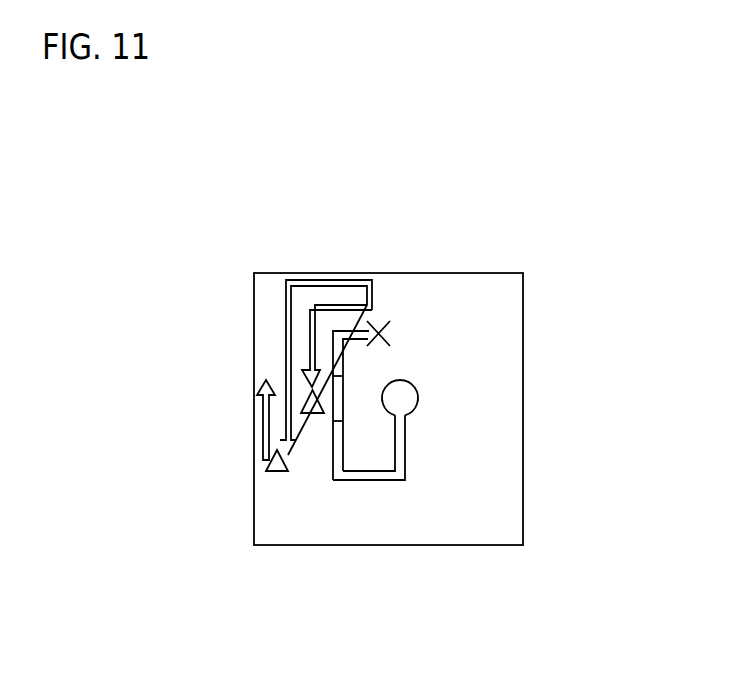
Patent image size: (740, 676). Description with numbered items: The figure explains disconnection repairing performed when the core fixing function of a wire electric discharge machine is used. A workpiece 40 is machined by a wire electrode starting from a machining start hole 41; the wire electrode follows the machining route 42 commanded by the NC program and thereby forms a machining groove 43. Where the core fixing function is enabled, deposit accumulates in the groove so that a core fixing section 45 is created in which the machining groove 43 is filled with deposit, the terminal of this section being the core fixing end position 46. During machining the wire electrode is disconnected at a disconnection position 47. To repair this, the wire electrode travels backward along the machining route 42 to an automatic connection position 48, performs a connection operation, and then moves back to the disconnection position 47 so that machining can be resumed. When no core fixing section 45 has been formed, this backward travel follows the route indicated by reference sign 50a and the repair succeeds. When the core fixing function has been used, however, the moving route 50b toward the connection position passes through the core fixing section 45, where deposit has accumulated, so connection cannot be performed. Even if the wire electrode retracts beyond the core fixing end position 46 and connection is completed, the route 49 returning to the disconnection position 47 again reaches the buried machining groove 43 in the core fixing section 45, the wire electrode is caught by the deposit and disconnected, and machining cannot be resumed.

The workpiece 40 is at (517, 400).
The machining start hole 41 is at (416, 405).
The machining route 42 is at (415, 457).
The machining groove 43 is at (334, 440).
The core fixing section 45 is at (348, 423).
The core fixing end position 46 is at (356, 372).
The disconnection position 47 is at (398, 316).
The automatic connection position 48 is at (253, 480).
The route returning to the disconnection position 49 is at (252, 383).
The backward travel route on the machining route 50a is at (348, 268).
The moving route to the connection position 50b is at (379, 298).